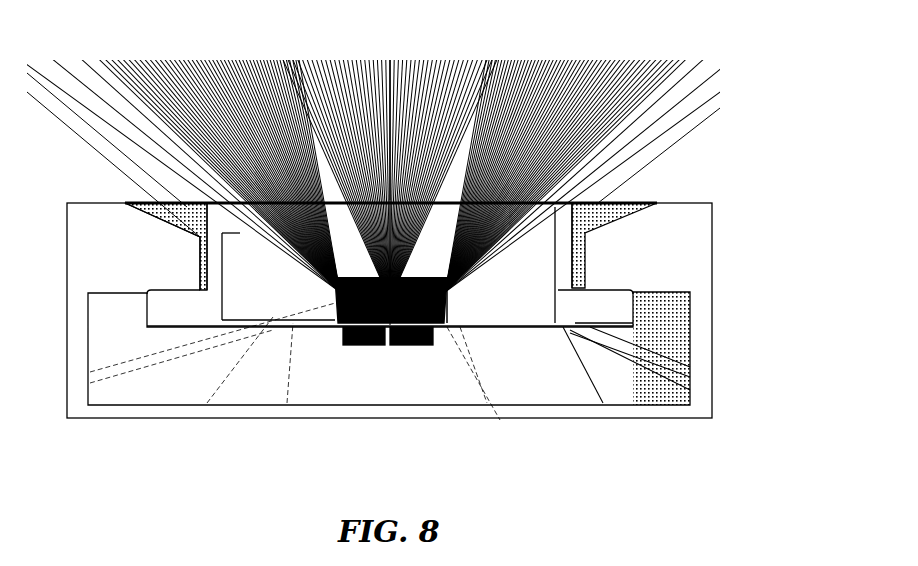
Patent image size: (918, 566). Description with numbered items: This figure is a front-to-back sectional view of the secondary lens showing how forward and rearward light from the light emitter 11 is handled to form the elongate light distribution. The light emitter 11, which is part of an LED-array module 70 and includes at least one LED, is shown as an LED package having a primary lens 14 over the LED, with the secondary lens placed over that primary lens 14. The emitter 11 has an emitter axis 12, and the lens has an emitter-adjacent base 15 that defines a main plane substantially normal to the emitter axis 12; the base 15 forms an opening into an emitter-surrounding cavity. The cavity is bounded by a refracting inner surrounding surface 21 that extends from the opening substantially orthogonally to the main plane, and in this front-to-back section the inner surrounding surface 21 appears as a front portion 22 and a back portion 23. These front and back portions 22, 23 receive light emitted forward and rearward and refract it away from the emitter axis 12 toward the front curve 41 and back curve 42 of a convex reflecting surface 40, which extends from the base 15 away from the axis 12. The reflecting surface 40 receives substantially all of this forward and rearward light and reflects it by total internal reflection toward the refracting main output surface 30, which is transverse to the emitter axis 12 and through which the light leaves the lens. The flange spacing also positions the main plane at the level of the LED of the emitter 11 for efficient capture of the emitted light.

The light emitter 11 is at (388, 324).
The emitter axis 12 is at (390, 90).
The primary lens 14 is at (370, 300).
The emitter-adjacent base 15 is at (325, 325).
The inner surrounding surface 21 is at (418, 327).
The front portion 22 is at (333, 292).
The back portion 23 is at (447, 288).
The main output surface 30 is at (481, 203).
The reflecting surface 40 is at (512, 274).
The front curve 41 is at (262, 276).
The back curve 42 is at (552, 250).
The LED-array module 70 is at (692, 267).